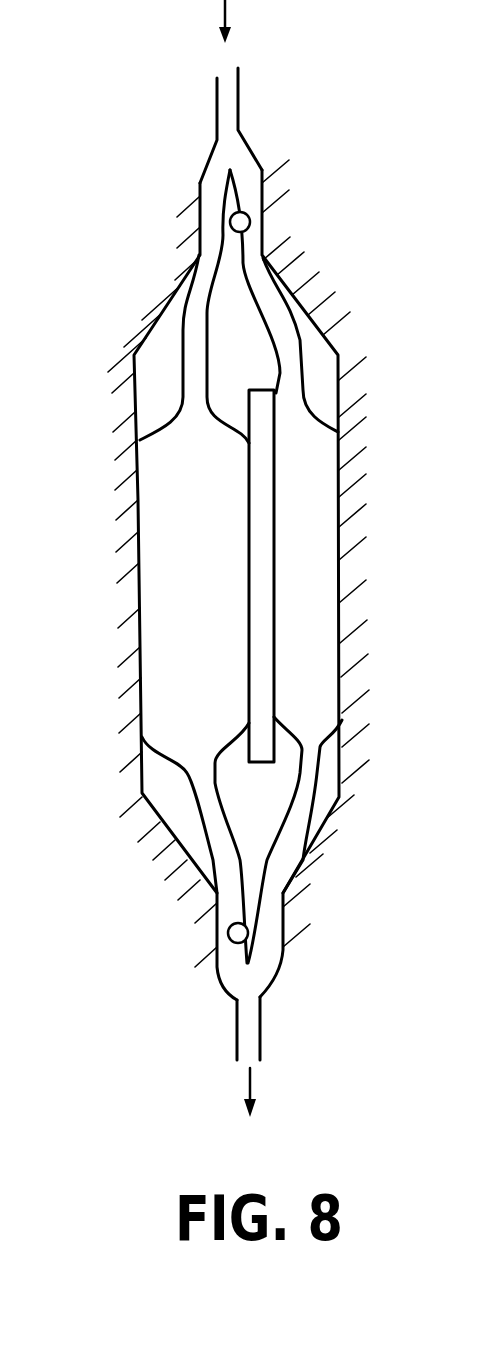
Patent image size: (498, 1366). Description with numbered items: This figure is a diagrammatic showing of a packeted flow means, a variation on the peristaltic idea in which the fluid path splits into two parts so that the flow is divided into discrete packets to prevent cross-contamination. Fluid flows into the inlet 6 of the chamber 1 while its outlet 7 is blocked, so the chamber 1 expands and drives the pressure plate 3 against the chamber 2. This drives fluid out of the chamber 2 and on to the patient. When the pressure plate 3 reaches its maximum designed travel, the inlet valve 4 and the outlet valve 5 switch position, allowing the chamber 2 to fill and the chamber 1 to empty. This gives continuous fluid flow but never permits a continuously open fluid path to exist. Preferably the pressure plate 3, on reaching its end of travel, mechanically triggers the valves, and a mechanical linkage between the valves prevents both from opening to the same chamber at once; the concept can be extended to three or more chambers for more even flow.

The chamber 1 is at (172, 583).
The chamber 2 is at (316, 563).
The pressure plate 3 is at (282, 388).
The inlet valve 4 is at (252, 221).
The outlet valve 5 is at (227, 935).
The inlet 6 is at (241, 109).
The outlet 7 is at (236, 1042).